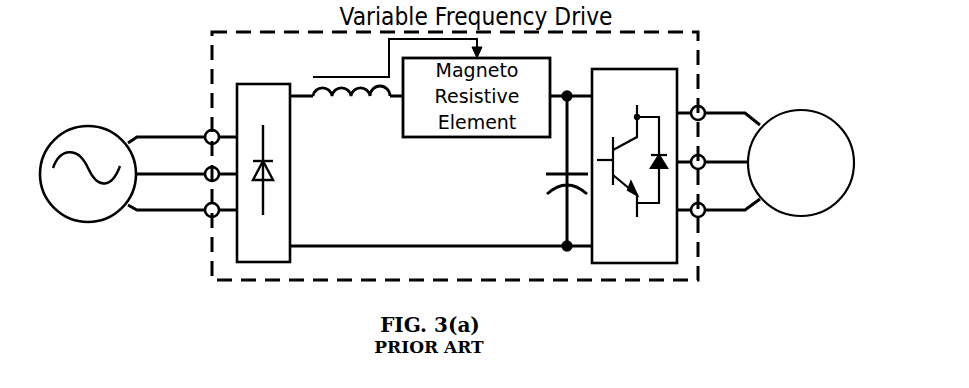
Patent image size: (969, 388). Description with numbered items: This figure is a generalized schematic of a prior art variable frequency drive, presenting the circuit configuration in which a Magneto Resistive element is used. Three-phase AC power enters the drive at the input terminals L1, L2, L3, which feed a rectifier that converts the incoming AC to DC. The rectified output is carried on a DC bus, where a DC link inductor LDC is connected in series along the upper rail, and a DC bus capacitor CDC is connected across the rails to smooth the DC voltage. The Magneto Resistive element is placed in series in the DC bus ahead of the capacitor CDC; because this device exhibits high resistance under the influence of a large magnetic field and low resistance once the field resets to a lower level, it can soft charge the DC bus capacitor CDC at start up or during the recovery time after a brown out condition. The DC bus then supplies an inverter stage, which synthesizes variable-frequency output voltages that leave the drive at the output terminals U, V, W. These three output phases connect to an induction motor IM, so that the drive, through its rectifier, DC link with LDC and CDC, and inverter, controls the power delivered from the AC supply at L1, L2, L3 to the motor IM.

The first AC line input L1 is at (182, 129).
The second AC line input L2 is at (186, 166).
The third AC line input L3 is at (182, 202).
The inverter output phase U is at (718, 107).
The inverter output phase V is at (712, 153).
The inverter output phase W is at (718, 201).
The DC link inductor LDC is at (351, 105).
The DC link capacitor CDC is at (552, 197).
The induction motor IM is at (801, 163).